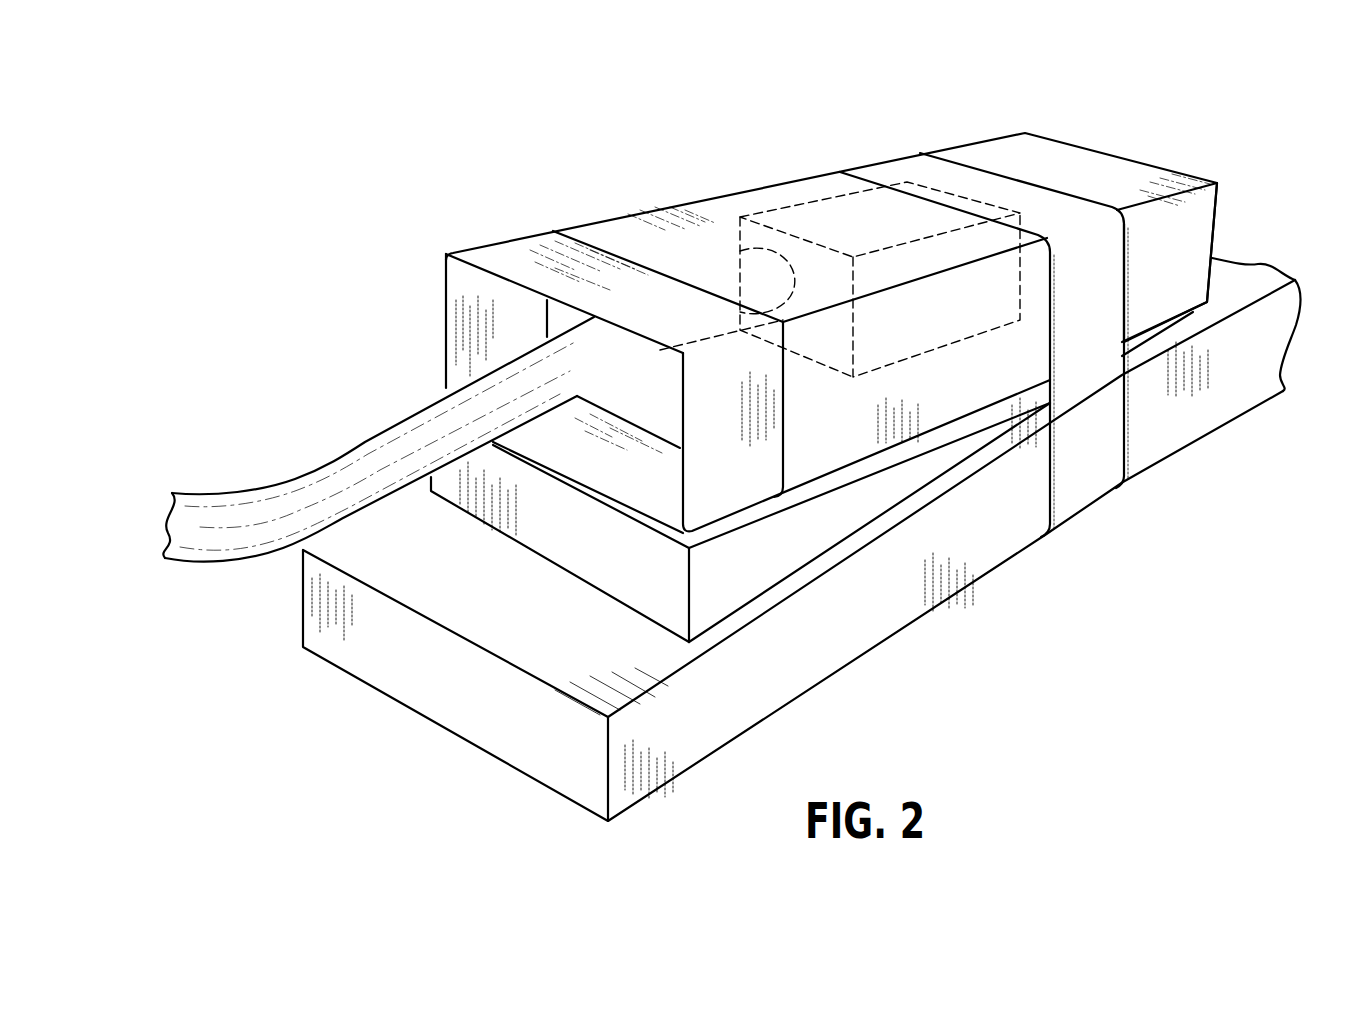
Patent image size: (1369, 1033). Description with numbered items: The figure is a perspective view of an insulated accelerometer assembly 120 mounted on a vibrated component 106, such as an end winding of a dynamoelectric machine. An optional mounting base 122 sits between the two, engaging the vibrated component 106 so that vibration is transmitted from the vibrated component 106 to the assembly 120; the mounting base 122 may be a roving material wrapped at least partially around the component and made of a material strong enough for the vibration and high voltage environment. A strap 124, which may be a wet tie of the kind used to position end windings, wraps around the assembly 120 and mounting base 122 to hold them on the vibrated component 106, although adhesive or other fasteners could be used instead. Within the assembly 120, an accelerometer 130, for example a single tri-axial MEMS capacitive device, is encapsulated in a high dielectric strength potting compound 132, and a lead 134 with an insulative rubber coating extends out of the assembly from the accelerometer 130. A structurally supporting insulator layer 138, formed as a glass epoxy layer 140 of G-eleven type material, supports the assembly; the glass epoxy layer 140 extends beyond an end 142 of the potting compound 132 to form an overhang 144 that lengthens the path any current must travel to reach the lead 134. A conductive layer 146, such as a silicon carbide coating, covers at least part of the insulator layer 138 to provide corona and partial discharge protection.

The vibrated component 106 is at (720, 730).
The insulated accelerometer assembly 120 is at (579, 165).
The mounting base 122 is at (768, 560).
The strap 124 is at (975, 162).
The accelerometer 130 is at (803, 207).
The high dielectric strength potting compound 132 is at (633, 399).
The lead 134 is at (377, 462).
The structurally supporting insulator layer 138 is at (526, 251).
The glass epoxy layer 140 is at (526, 251).
The end of high dielectric strength potting compound 142 is at (633, 399).
The overhang 144 is at (497, 297).
The conductive layer 146 is at (1101, 168).